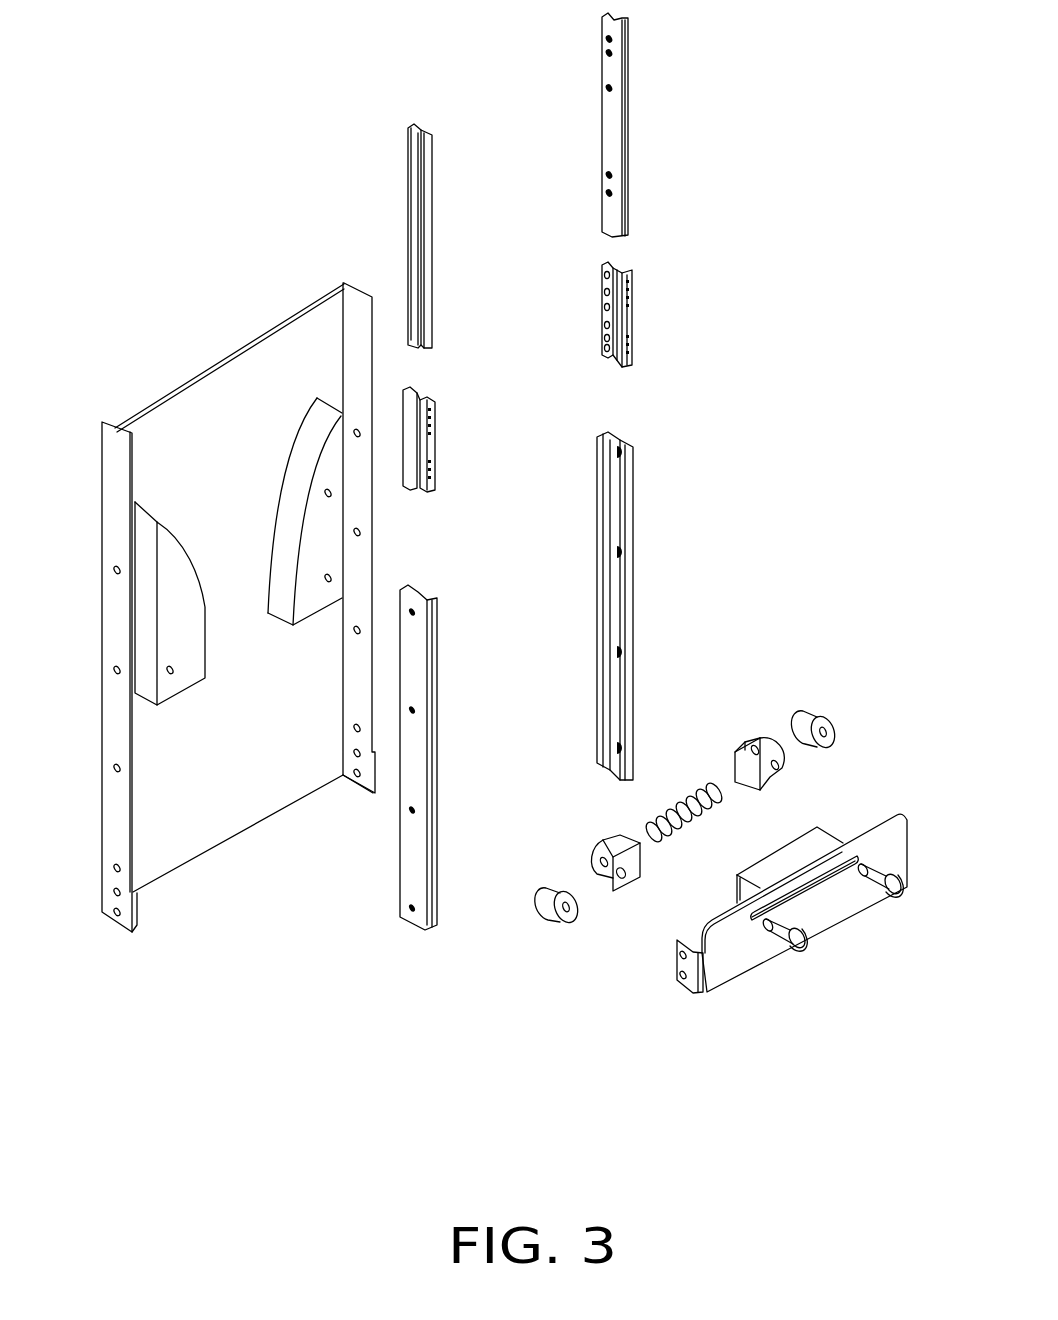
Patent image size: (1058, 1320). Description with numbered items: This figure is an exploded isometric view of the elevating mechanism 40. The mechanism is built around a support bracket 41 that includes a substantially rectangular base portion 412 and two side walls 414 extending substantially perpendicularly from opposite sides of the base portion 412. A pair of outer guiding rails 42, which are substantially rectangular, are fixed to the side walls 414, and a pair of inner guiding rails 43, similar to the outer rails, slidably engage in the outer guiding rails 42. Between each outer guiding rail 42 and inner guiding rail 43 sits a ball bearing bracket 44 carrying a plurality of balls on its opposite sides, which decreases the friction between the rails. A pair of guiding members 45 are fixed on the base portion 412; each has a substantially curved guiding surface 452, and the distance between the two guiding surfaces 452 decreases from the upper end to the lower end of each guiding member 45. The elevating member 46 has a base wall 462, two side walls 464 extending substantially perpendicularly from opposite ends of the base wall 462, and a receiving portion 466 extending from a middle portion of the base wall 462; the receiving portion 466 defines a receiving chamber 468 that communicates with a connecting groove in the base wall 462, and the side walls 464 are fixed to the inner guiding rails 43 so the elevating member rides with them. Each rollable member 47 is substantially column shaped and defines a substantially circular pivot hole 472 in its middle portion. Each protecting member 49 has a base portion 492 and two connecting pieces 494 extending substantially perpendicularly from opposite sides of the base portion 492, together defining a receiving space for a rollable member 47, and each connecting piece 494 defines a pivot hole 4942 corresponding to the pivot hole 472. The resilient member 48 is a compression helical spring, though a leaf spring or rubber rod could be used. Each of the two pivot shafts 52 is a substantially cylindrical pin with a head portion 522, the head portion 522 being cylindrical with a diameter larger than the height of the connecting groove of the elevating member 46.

The elevating mechanism 40 is at (300, 60).
The support bracket 41 is at (211, 343).
The base portion 412 is at (274, 365).
The side walls 414 is at (118, 470).
The guiding members 45 is at (271, 444).
The guiding surface 452 is at (287, 526).
The outer guiding rails 42 is at (624, 498).
The inner guiding rails 43 is at (616, 72).
The ball bearing brackets 44 is at (628, 318).
The elevating member 46 is at (700, 1022).
The base wall 462 is at (742, 955).
The side walls 464 is at (688, 980).
The receiving portion 466 is at (795, 850).
The receiving chamber 468 is at (738, 884).
The rollable members 47 is at (532, 946).
The pivot hole 472 is at (565, 918).
The resilient member 48 is at (674, 840).
The protecting members 49 is at (578, 873).
The base portion 492 is at (630, 828).
The connecting pieces 494 is at (605, 850).
The pivot hole 4942 is at (625, 880).
The pivot shafts 52 is at (812, 928).
The head portion 522 is at (895, 888).